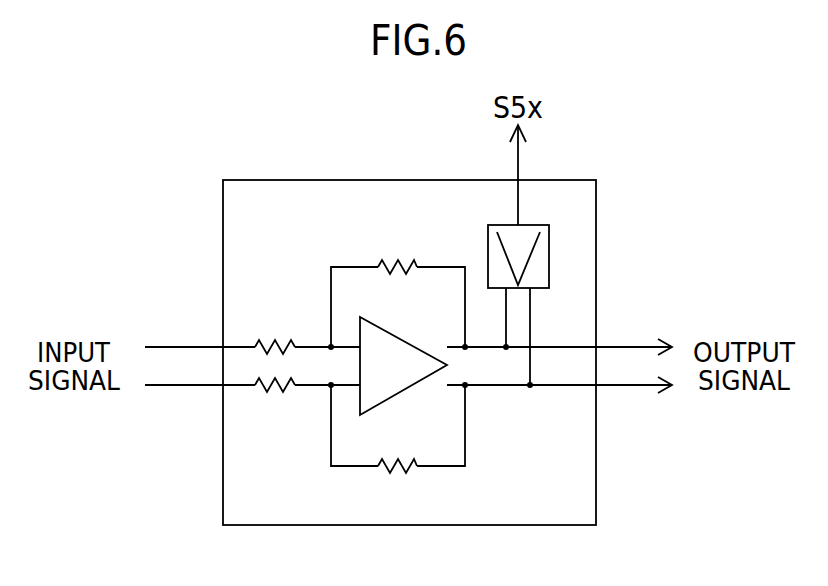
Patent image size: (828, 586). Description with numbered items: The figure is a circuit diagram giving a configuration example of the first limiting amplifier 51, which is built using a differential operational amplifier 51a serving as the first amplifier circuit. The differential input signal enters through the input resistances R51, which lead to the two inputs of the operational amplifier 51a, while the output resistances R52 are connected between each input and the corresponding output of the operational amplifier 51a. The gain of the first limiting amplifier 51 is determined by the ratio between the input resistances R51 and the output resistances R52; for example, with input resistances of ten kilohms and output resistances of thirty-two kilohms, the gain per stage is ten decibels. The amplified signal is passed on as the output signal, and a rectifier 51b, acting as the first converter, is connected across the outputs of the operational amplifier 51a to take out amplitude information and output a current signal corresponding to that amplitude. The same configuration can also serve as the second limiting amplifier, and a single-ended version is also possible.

The first limiting amplifier 51 is at (596, 205).
The differential operational amplifier 51a is at (373, 323).
The rectifier 51b is at (549, 263).
The input resistance R51 is at (276, 368).
The output resistance R52 is at (398, 370).